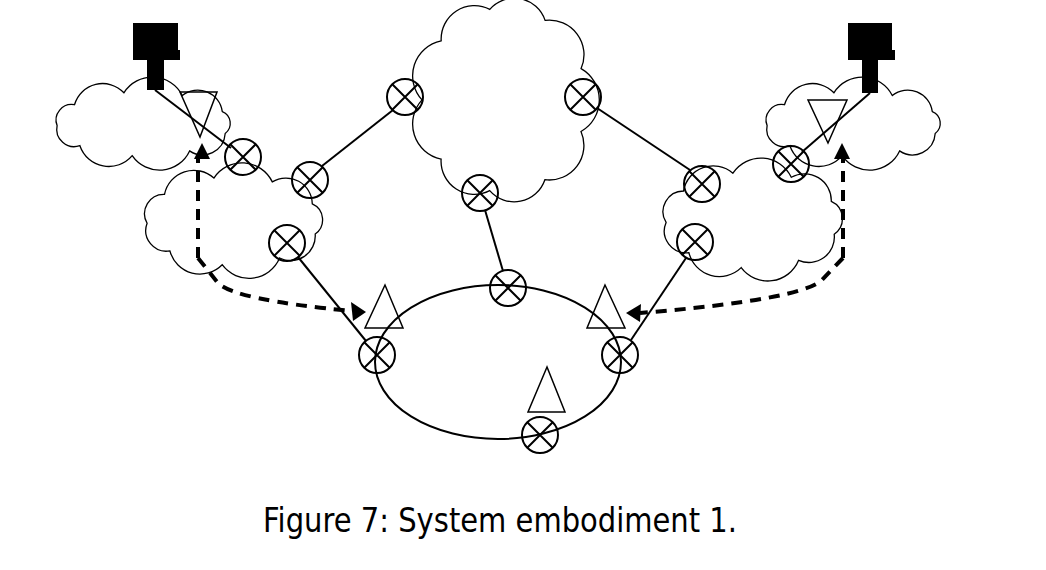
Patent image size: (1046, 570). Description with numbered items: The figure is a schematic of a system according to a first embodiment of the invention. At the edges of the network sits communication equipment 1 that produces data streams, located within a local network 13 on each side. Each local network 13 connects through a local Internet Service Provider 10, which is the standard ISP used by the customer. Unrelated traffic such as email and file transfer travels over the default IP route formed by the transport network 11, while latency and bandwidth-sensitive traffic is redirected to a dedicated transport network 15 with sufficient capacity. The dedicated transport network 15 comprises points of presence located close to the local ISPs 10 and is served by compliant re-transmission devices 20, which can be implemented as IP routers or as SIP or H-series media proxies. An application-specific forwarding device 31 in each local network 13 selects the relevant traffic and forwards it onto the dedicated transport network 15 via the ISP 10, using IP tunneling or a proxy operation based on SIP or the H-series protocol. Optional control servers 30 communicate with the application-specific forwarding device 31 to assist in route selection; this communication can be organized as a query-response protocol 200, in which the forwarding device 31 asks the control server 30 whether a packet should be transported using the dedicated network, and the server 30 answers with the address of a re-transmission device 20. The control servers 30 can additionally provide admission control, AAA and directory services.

The communication equipment 1 is at (505, 83).
The local Internet Service Provider 10 is at (494, 219).
The transport network 11 is at (506, 101).
The local network 13 is at (498, 123).
The dedicated transport network 15 is at (498, 362).
The re-transmission device 20 is at (517, 267).
The control server 30 is at (499, 339).
The application-specific forwarding device 31 is at (513, 117).
The query-response protocol 200 is at (521, 232).